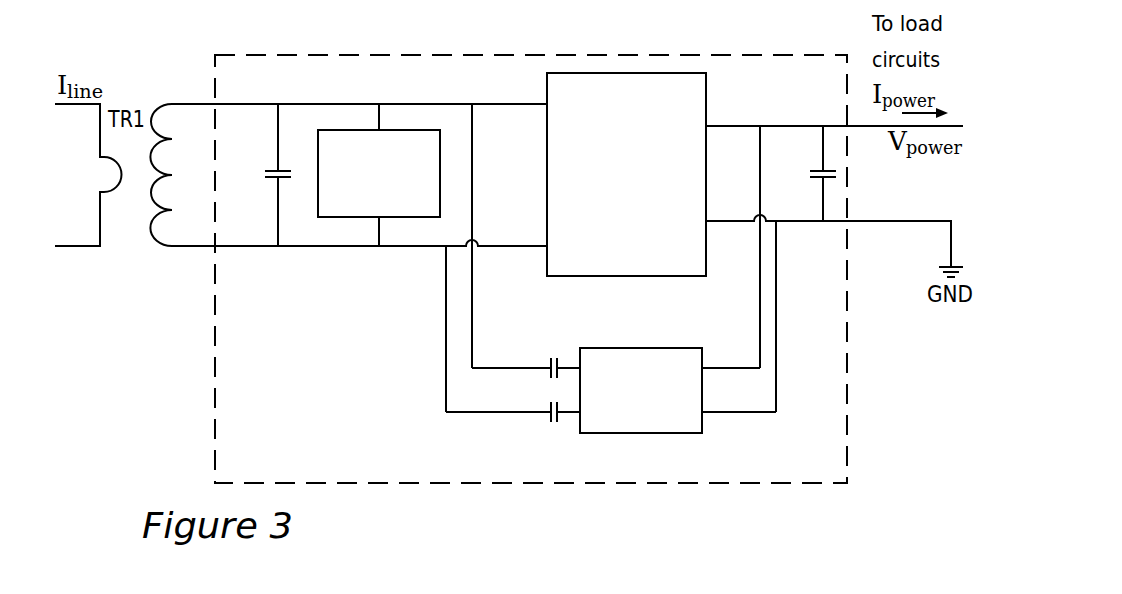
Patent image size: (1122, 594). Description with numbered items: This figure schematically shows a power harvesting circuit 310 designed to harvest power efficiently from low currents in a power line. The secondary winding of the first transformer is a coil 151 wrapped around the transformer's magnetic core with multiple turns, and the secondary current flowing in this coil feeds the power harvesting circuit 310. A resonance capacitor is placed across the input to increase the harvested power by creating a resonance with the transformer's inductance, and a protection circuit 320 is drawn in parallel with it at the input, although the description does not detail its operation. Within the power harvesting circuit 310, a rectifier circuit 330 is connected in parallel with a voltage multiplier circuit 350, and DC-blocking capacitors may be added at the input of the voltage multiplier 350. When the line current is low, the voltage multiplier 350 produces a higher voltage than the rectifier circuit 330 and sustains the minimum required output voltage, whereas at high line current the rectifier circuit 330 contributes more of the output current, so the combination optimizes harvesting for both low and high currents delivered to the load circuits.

The coil 151 is at (150, 245).
The power harvesting circuit 310 is at (215, 413).
The protection circuit 320 is at (424, 130).
The rectifier circuit 330 is at (706, 95).
The voltage multiplier circuit 350 is at (640, 433).